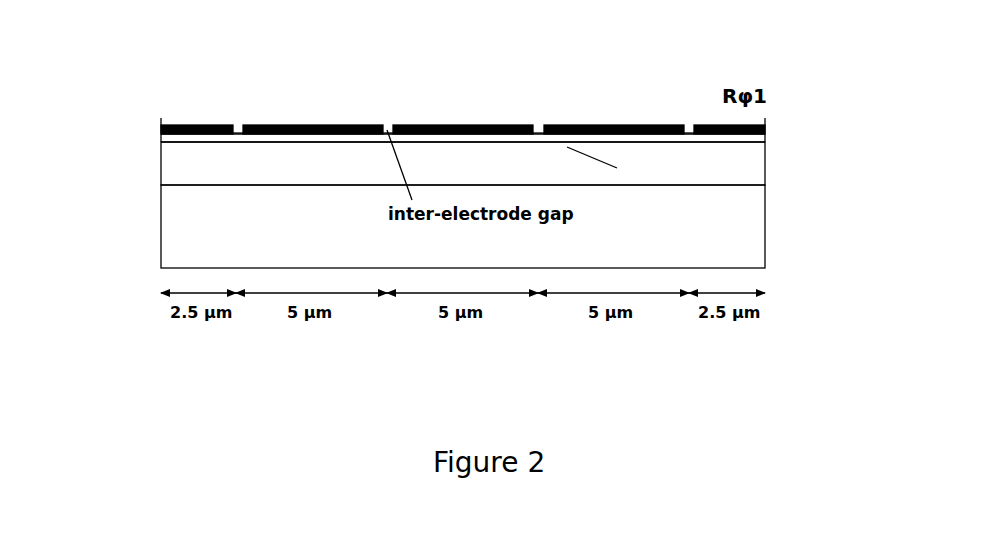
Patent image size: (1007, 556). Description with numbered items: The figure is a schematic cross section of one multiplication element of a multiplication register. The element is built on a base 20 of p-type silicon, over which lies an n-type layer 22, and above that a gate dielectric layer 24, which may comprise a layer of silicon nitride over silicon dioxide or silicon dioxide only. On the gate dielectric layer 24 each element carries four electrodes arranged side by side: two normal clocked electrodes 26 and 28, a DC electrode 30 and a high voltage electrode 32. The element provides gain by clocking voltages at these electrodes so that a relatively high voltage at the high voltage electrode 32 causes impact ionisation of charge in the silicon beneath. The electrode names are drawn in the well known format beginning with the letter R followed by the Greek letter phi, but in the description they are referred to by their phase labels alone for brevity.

The base 20 is at (182, 209).
The n-type layer 22 is at (186, 163).
The gate dielectric layer 24 is at (740, 136).
The electrode φ1 26 is at (183, 114).
The electrode φ3 28 is at (645, 114).
The DC electrode φDC 30 is at (345, 114).
The high voltage electrode φ2HV 32 is at (508, 113).